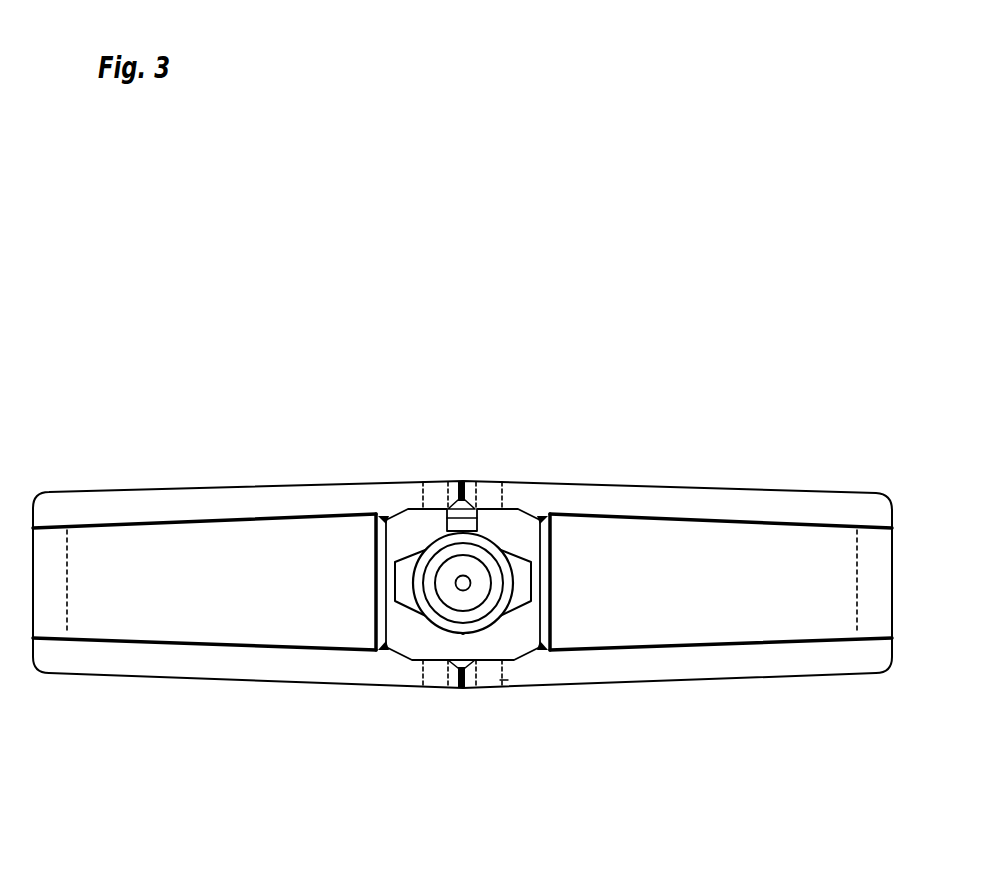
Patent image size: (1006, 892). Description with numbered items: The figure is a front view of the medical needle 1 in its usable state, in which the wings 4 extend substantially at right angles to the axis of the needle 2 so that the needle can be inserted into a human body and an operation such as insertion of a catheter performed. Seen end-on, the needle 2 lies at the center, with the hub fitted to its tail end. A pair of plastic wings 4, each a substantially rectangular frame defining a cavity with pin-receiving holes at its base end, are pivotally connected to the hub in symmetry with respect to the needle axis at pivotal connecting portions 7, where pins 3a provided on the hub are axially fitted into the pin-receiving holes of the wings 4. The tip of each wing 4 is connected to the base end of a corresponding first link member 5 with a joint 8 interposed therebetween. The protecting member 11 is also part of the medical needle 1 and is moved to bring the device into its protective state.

The medical needle 1 is at (467, 202).
The needle 2 is at (455, 585).
The pins 3a is at (502, 680).
The wings 4 is at (699, 486).
The first link members 5 is at (737, 567).
The pivotal connecting portions 7 is at (437, 688).
The joint 8 is at (892, 583).
The protecting member 11 is at (408, 528).